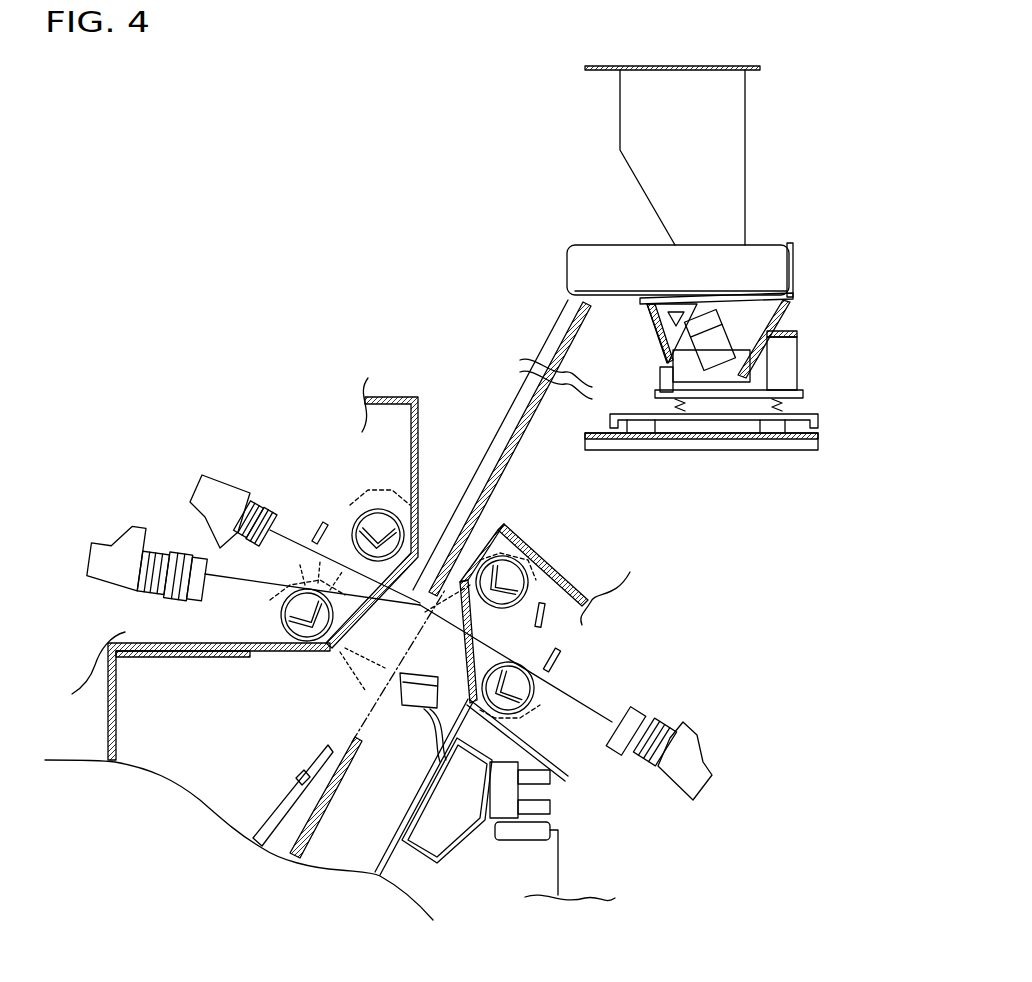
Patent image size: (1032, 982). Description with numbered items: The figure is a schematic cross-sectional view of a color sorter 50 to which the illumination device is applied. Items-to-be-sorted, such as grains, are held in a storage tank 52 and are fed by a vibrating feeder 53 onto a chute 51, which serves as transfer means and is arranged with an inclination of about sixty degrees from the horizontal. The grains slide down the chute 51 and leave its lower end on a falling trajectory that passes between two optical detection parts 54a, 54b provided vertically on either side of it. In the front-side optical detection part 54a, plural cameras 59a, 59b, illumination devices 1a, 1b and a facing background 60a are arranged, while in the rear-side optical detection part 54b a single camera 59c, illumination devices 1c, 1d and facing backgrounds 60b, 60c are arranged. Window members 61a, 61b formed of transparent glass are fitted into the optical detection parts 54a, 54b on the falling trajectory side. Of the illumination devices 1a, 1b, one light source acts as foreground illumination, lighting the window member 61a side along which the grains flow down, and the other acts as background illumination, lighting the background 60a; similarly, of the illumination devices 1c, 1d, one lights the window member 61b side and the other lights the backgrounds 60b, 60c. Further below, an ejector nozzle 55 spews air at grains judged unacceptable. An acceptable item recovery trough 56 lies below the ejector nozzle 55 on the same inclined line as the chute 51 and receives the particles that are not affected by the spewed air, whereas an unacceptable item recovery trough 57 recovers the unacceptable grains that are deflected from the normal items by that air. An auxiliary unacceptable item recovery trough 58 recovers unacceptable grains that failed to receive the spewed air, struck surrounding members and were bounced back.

The color sorter 50 is at (337, 218).
The chute 51 is at (478, 497).
The storage tank 52 is at (622, 125).
The vibrating feeder 53 is at (558, 278).
The optical detection part 54a is at (294, 422).
The optical detection part 54b is at (652, 619).
The ejector nozzle 55 is at (400, 710).
The acceptable item recovery trough 56 is at (277, 846).
The unacceptable item recovery trough 57 is at (183, 782).
The auxiliary unacceptable item recovery trough 58 is at (360, 862).
The camera 59a is at (203, 475).
The camera 59b is at (118, 548).
The camera 59c is at (700, 785).
The background 60a is at (316, 522).
The background 60b is at (560, 622).
The background 60c is at (560, 668).
The window member 61a is at (380, 590).
The window member 61b is at (425, 612).
The illumination device 1a is at (362, 515).
The illumination device 1b is at (285, 628).
The illumination device 1c is at (522, 568).
The illumination device 1d is at (530, 722).